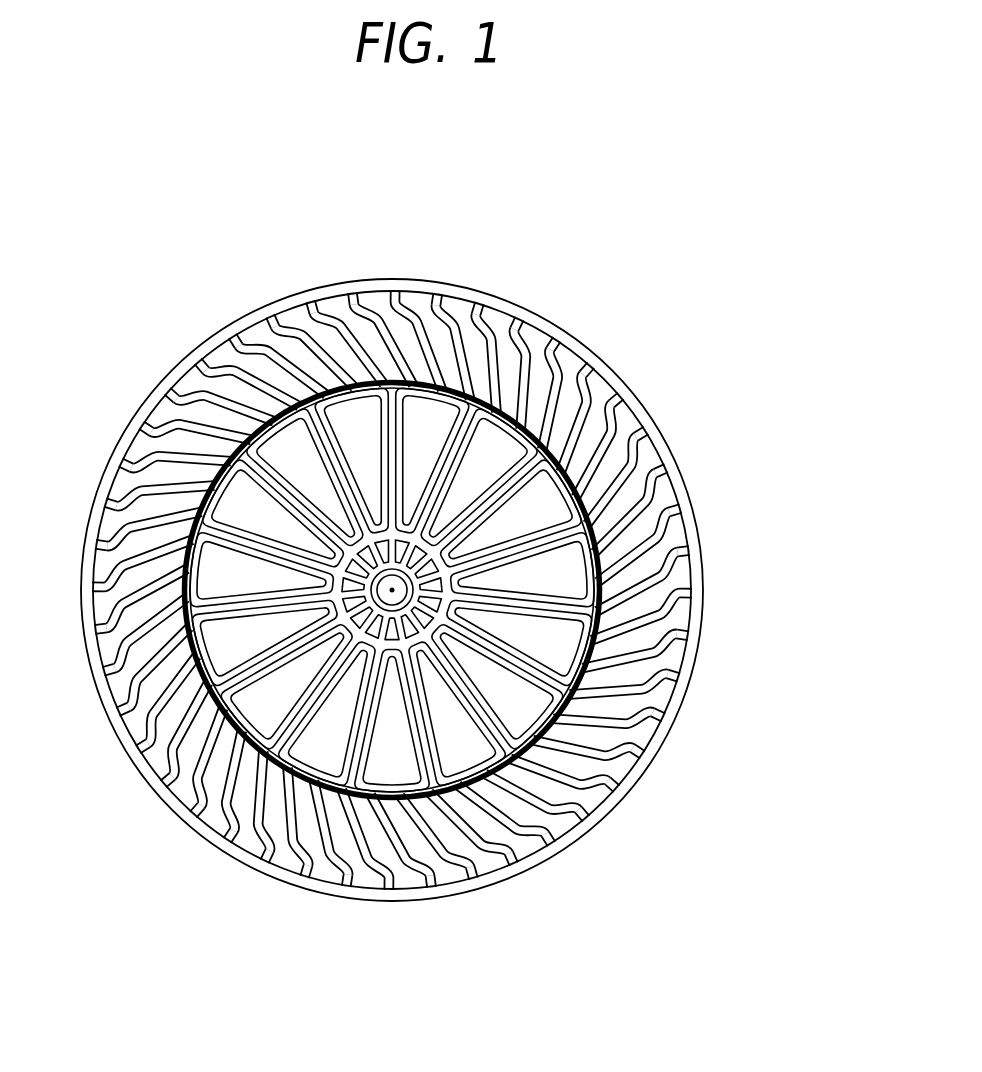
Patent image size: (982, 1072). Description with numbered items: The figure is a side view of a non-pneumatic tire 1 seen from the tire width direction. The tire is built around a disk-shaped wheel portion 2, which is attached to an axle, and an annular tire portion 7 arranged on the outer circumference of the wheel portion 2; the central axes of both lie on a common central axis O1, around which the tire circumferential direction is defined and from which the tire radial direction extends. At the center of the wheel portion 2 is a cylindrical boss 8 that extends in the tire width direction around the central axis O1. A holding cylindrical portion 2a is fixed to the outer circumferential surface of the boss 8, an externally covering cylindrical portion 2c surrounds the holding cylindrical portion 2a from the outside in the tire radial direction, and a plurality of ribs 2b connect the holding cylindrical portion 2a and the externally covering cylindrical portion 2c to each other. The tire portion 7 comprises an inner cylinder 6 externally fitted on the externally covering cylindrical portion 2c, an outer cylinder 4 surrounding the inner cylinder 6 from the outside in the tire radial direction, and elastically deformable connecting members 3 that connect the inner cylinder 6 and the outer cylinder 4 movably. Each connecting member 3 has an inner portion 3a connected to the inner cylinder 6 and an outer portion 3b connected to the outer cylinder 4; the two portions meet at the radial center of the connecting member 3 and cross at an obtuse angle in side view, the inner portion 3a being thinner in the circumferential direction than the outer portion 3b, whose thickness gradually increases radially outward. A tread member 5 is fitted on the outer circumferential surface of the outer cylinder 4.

The non-pneumatic tire 1 is at (228, 248).
The wheel portion 2 is at (490, 588).
The holding cylindrical portion 2a is at (493, 490).
The ribs 2b is at (500, 522).
The externally covering cylindrical portion 2c is at (537, 537).
The connecting members 3 is at (442, 590).
The inner portion 3a is at (637, 600).
The outer portion 3b is at (660, 548).
The outer cylinder 4 is at (683, 657).
The tread member 5 is at (620, 798).
The inner cylinder 6 is at (595, 690).
The tire portion 7 is at (462, 590).
The boss 8 is at (387, 570).
The central axis O1 is at (392, 590).